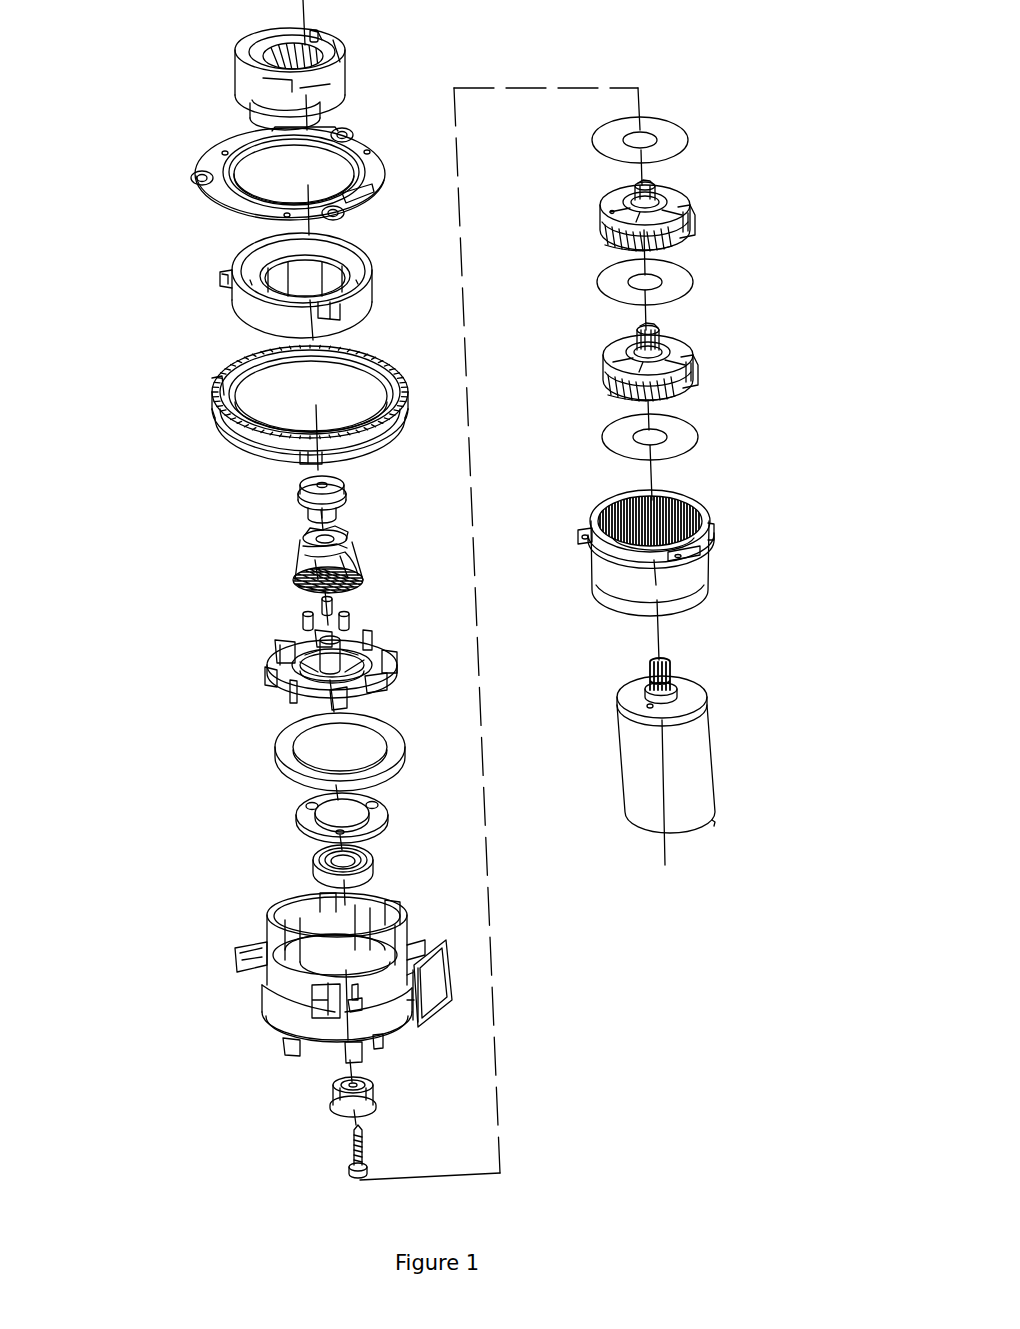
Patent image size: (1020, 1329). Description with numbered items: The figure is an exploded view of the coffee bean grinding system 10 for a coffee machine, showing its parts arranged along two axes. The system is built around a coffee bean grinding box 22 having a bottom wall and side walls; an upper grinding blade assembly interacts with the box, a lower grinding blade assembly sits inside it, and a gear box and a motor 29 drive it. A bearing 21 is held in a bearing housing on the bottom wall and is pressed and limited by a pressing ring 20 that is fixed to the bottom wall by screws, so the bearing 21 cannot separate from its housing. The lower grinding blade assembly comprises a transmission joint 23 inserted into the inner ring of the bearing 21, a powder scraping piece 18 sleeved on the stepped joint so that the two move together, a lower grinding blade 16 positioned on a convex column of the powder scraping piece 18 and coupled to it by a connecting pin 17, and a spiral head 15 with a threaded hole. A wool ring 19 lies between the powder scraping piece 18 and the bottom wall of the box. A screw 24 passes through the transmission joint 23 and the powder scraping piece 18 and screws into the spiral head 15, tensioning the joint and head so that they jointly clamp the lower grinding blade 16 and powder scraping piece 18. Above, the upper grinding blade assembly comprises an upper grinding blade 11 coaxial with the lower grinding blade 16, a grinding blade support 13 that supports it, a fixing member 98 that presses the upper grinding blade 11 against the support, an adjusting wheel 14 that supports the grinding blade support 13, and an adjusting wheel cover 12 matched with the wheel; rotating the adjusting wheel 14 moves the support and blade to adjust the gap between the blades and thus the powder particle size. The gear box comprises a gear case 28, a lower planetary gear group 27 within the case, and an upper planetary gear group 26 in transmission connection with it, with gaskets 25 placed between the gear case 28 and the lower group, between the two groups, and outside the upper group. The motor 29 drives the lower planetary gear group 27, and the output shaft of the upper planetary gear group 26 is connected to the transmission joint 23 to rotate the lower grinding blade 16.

The coffee bean grinding system 10 is at (642, 1068).
The fixing member 98 is at (345, 45).
The upper grinding blade 11 is at (262, 110).
The adjusting wheel cover 12 is at (232, 168).
The grinding blade support 13 is at (240, 307).
The adjusting wheel 14 is at (220, 392).
The spiral head 15 is at (306, 506).
The lower grinding blade 16 is at (312, 560).
The connecting pin 17 is at (302, 618).
The powder scraping piece 18 is at (277, 670).
The wool ring 19 is at (295, 750).
The pressing ring 20 is at (302, 815).
The bearing 21 is at (318, 880).
The coffee bean grinding box 22 is at (285, 1015).
The transmission joint 23 is at (342, 1100).
The screw 24 is at (355, 1150).
The gaskets 25 is at (668, 142).
The upper planetary gear group 26 is at (690, 228).
The lower planetary gear group 27 is at (690, 375).
The gear case 28 is at (695, 577).
The motor 29 is at (692, 762).